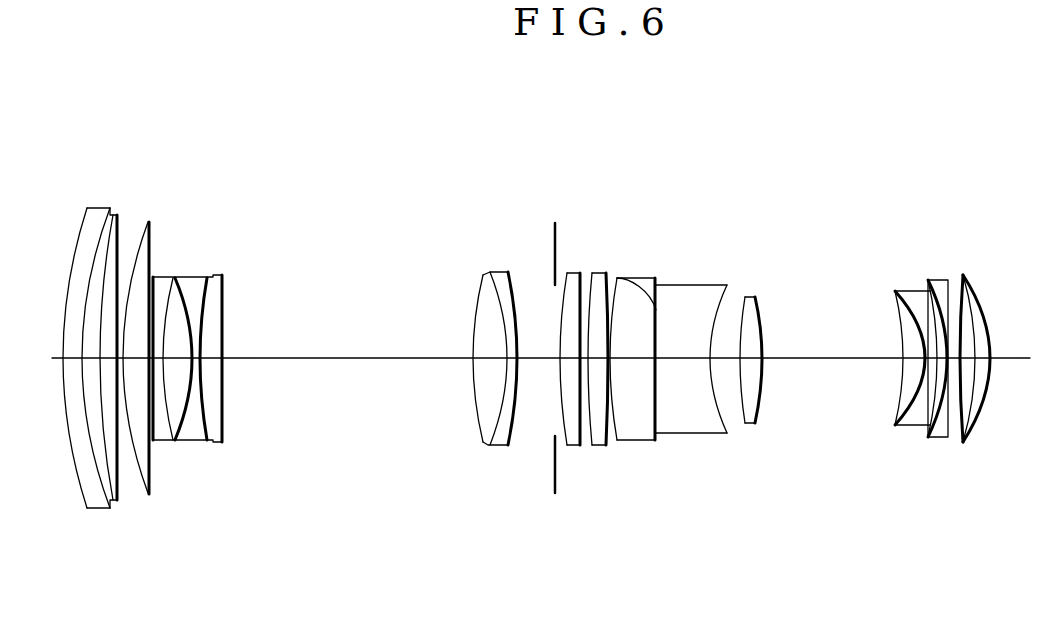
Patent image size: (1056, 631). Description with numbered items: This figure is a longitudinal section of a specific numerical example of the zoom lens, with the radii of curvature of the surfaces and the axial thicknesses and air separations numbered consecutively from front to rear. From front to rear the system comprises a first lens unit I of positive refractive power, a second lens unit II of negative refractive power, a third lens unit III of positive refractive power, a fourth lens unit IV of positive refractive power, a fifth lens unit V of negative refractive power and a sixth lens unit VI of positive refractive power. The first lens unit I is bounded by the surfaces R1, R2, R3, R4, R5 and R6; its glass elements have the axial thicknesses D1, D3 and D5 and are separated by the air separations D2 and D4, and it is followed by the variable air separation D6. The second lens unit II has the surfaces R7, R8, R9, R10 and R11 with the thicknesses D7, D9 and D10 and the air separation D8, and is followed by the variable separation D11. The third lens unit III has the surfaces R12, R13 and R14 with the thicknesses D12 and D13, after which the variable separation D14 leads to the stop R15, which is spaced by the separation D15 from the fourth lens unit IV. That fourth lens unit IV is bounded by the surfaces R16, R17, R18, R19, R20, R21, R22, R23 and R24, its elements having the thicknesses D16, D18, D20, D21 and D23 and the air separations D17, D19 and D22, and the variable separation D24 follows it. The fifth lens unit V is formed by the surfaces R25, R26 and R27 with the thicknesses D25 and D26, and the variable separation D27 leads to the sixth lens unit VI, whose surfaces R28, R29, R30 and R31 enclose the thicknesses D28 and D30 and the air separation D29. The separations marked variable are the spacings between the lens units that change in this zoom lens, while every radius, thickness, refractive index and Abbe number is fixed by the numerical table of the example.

The first lens unit I is at (147, 125).
The second lens unit II is at (223, 125).
The third lens unit III is at (515, 125).
The fourth lens unit IV is at (758, 125).
The fifth lens unit V is at (927, 125).
The sixth lens unit VI is at (992, 125).
The lens surface R1 is at (80, 247).
The lens surface R2 is at (96, 248).
The lens surface R3 is at (108, 238).
The lens surface R4 is at (117, 215).
The lens surface R5 is at (134, 247).
The lens surface R6 is at (150, 248).
The lens surface R7 is at (152, 277).
The lens surface R8 is at (169, 277).
The lens surface R9 is at (184, 277).
The lens surface R10 is at (211, 277).
The lens surface R11 is at (222, 277).
The lens surface R12 is at (478, 286).
The lens surface R13 is at (488, 272).
The lens surface R14 is at (508, 272).
The stop R15 is at (552, 262).
The lens surface R16 is at (566, 273).
The lens surface R17 is at (580, 273).
The lens surface R18 is at (596, 273).
The lens surface R19 is at (612, 276).
The lens surface R20 is at (640, 278).
The lens surface R21 is at (655, 310).
The lens surface R22 is at (692, 285).
The lens surface R23 is at (740, 295).
The lens surface R24 is at (757, 297).
The lens surface R25 is at (893, 289).
The lens surface R26 is at (905, 291).
The lens surface R27 is at (927, 280).
The lens surface R28 is at (937, 280).
The lens surface R29 is at (960, 276).
The lens surface R30 is at (968, 276).
The lens surface R31 is at (985, 288).
The axial thickness D1 is at (73, 362).
The air separation D2 is at (91, 362).
The axial thickness D3 is at (108, 362).
The air separation D4 is at (120, 362).
The axial thickness D5 is at (136, 362).
The variable air separation D6 is at (152, 362).
The axial thickness D7 is at (158, 362).
The air separation D8 is at (180, 362).
The axial thickness D9 is at (205, 362).
The axial thickness D10 is at (218, 362).
The variable air separation D11 is at (345, 362).
The axial thickness D12 is at (490, 362).
The axial thickness D13 is at (512, 362).
The variable air separation D14 is at (536, 362).
The air separation D15 is at (557, 362).
The axial thickness D16 is at (570, 362).
The air separation D17 is at (584, 362).
The axial thickness D18 is at (598, 362).
The air separation D19 is at (612, 362).
The axial thickness D20 is at (632, 362).
The axial thickness D21 is at (682, 362).
The air separation D22 is at (725, 362).
The axial thickness D23 is at (751, 362).
The variable air separation D24 is at (832, 362).
The axial thickness D25 is at (914, 362).
The axial thickness D26 is at (931, 362).
The variable air separation D27 is at (942, 362).
The axial thickness D28 is at (953, 362).
The air separation D29 is at (967, 362).
The axial thickness D30 is at (982, 362).